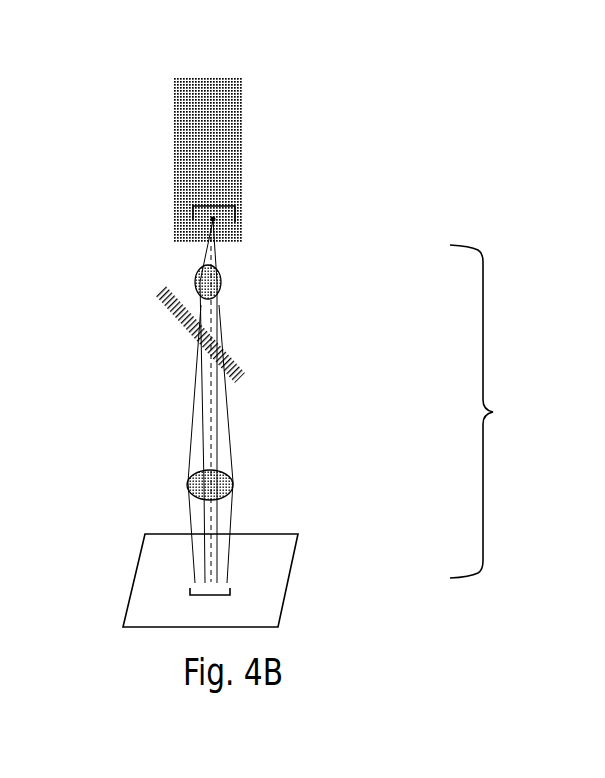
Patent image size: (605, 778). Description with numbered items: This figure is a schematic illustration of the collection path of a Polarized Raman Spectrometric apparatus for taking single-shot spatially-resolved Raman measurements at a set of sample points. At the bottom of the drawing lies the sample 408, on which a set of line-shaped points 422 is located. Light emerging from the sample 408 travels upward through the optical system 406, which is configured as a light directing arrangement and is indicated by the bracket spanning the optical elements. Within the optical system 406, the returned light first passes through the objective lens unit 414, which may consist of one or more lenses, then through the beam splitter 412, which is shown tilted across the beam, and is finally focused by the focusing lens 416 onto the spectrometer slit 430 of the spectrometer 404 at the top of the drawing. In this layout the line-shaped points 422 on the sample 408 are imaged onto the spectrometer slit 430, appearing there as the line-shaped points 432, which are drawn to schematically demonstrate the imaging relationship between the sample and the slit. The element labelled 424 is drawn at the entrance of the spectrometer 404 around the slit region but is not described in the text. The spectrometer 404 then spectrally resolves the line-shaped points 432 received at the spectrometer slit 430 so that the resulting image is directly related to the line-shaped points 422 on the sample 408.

The spectrometer 404 is at (240, 160).
The aperture 424 is at (156, 128).
The spectrometer slit 430 is at (230, 224).
The line-shaped points 432 is at (218, 224).
The focusing lens 416 is at (205, 275).
The beam splitter 412 is at (167, 307).
The objective lens unit 414 is at (192, 490).
The sample 408 is at (138, 583).
The line-shaped points 422 is at (116, 644).
The optical system 406 is at (495, 412).